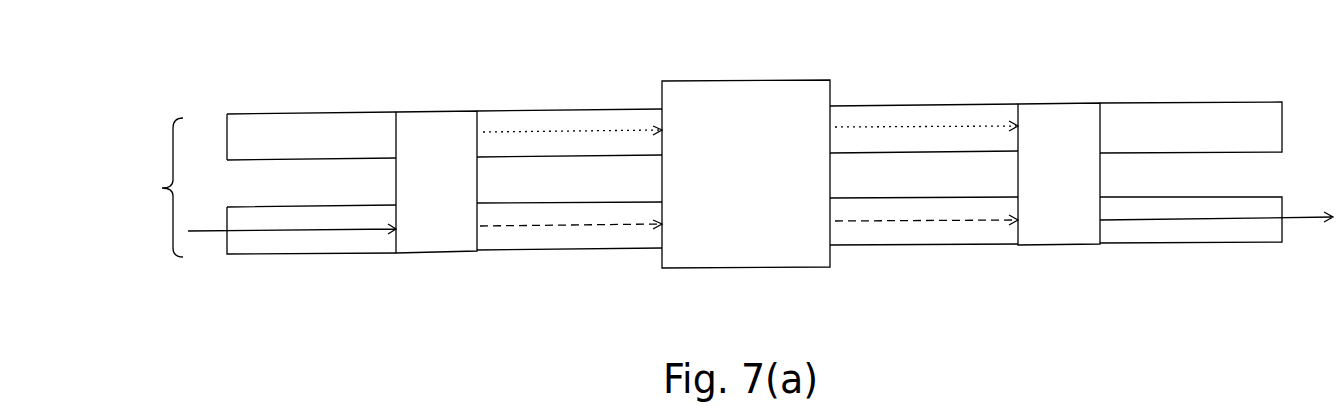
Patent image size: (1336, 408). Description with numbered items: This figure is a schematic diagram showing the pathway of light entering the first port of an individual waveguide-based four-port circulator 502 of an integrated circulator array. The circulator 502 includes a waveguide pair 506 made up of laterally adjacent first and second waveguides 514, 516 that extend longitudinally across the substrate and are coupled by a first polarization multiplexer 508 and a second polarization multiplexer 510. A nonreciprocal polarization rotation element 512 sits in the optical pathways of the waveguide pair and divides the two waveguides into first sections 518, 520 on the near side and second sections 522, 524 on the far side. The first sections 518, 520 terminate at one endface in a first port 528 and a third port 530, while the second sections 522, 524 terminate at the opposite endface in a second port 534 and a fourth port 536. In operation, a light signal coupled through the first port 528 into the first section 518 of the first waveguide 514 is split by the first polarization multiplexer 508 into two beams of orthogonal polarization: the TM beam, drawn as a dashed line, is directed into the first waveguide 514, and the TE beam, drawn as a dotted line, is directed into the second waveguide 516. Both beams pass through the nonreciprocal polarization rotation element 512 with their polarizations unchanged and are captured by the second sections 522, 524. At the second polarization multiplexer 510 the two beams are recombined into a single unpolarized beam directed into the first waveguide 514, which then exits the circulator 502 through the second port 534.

The circulator 502 is at (637, 332).
The waveguide pair 506 is at (153, 187).
The first polarization multiplexer 508 is at (432, 112).
The second polarization multiplexer 510 is at (1056, 104).
The nonreciprocal polarization rotation element 512 is at (738, 81).
The first waveguide 514 is at (318, 254).
The second waveguide 516 is at (303, 113).
The first section of first waveguide 518 is at (549, 248).
The first section of second waveguide 520 is at (566, 109).
The second section of first waveguide 522 is at (958, 246).
The second section of second waveguide 524 is at (918, 106).
The first port 528 is at (227, 242).
The third port 530 is at (227, 134).
The second port 534 is at (1283, 228).
The fourth port 536 is at (1283, 125).